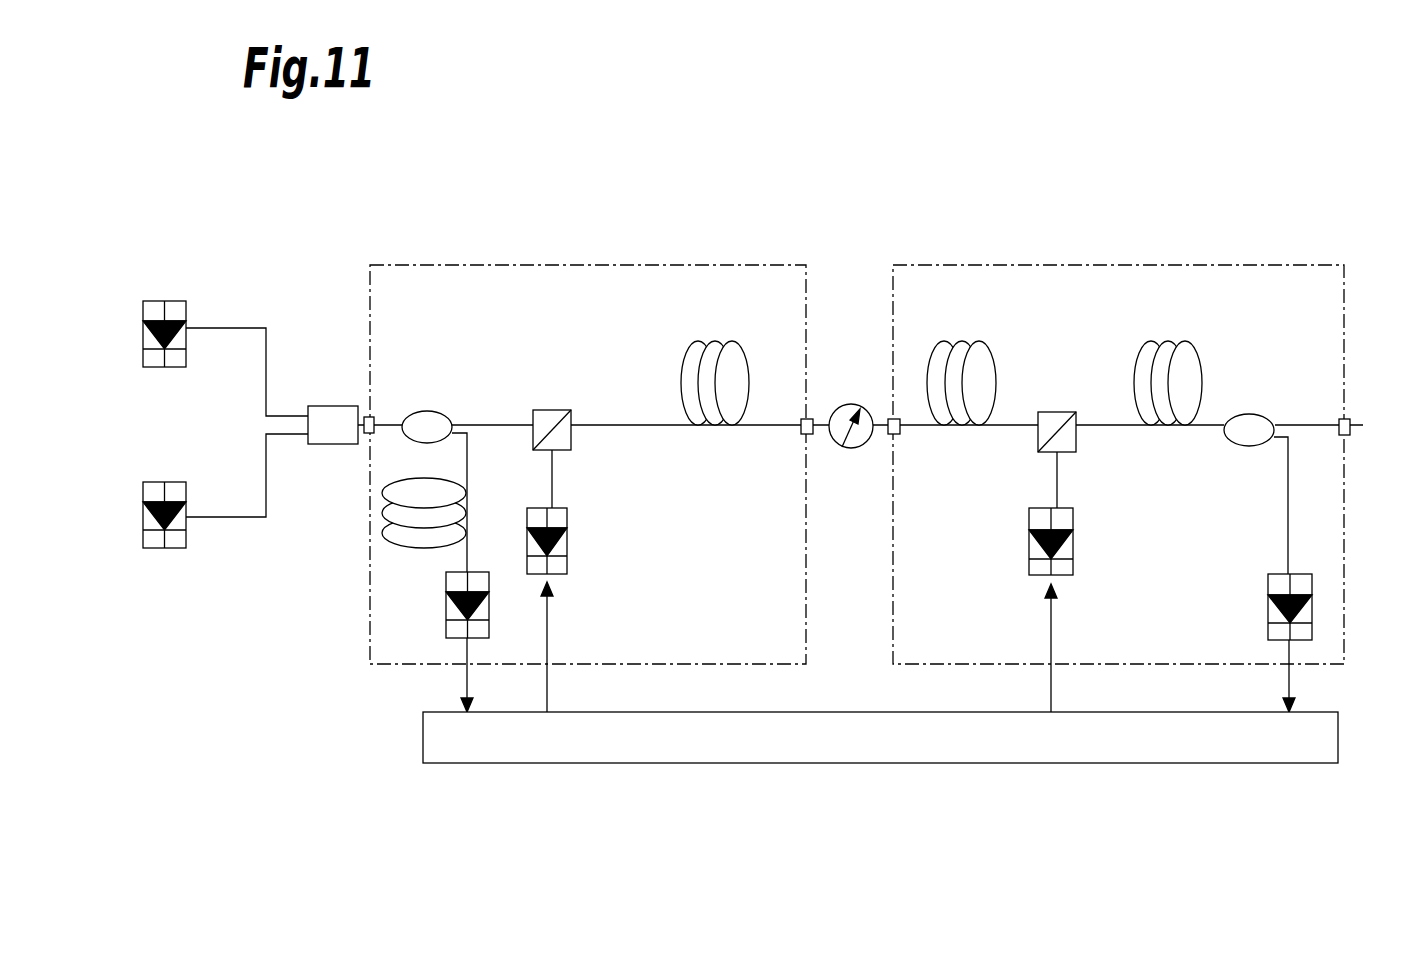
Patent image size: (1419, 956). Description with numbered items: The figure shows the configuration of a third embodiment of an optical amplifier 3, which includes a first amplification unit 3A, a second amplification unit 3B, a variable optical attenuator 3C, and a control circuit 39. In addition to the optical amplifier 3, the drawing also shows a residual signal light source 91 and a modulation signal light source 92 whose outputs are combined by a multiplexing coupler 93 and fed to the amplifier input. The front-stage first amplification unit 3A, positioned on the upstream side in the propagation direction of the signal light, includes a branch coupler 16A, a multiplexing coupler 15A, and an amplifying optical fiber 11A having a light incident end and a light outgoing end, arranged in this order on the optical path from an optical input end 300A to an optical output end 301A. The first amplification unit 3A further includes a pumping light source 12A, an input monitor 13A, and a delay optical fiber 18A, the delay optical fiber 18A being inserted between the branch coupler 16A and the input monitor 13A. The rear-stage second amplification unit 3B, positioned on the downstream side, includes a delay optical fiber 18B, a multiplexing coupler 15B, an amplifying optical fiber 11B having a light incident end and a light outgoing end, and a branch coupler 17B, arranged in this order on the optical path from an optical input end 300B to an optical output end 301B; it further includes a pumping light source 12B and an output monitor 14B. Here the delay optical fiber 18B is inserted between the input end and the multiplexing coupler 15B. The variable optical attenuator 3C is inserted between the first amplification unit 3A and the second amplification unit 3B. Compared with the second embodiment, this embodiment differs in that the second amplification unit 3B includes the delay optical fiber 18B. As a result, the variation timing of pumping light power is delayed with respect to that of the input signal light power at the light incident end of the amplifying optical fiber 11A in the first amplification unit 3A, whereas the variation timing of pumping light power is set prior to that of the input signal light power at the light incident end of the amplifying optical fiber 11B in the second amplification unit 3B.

The optical amplifier 3 is at (1012, 158).
The first amplification unit 3A is at (744, 265).
The second amplification unit 3B is at (1269, 265).
The variable optical attenuator 3C is at (851, 404).
The amplifying optical fiber 11A is at (733, 341).
The amplifying optical fiber 11B is at (1186, 341).
The pumping light source 12A is at (568, 514).
The pumping light source 12B is at (1073, 514).
The input monitor 13A is at (470, 572).
The output monitor 14B is at (1274, 574).
The multiplexing coupler 15A is at (553, 410).
The multiplexing coupler 15B is at (1059, 412).
The branch coupler 16A is at (427, 411).
The branch coupler 17B is at (1249, 414).
The delay optical fiber 18A is at (418, 548).
The delay optical fiber 18B is at (980, 341).
The control circuit 39 is at (423, 733).
The residual signal light source 91 is at (143, 306).
The modulation signal light source 92 is at (143, 490).
The multiplexing coupler 93 is at (333, 445).
The optical input end 300A is at (366, 417).
The optical input end 300B is at (895, 419).
The optical output end 301A is at (812, 434).
The optical output end 301B is at (1346, 436).